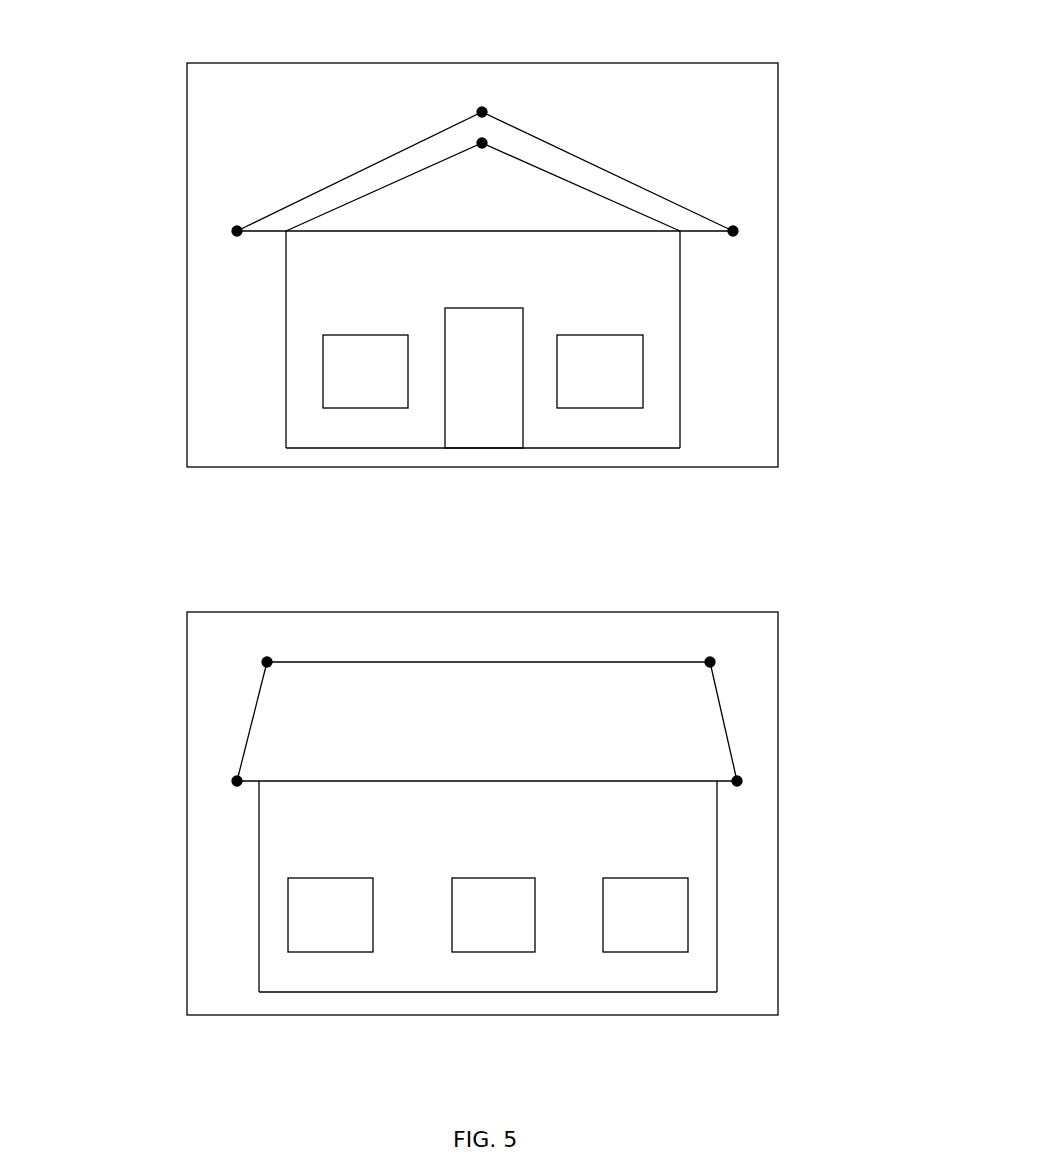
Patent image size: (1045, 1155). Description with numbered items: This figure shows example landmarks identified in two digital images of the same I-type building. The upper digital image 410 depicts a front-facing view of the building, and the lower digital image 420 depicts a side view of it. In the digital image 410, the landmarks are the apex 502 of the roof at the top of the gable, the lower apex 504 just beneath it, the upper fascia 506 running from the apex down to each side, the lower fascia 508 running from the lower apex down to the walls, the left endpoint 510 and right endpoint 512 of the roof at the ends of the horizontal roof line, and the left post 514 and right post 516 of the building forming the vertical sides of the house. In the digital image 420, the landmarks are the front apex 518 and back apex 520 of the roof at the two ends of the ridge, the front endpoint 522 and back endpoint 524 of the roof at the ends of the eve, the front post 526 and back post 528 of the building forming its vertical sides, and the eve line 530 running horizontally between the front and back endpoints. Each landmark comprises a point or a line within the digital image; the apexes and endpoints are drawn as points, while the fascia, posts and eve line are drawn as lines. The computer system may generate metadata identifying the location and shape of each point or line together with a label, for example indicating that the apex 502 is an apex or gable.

The digital image 410 is at (553, 490).
The digital image 420 is at (553, 1040).
The apex 502 is at (489, 92).
The lower apex 504 is at (482, 164).
The upper fascia 506 is at (349, 164).
The lower fascia 508 is at (600, 184).
The left endpoint 510 is at (219, 233).
The right endpoint 512 is at (752, 232).
The left post 514 is at (273, 341).
The right post 516 is at (693, 339).
The front apex 518 is at (266, 644).
The back apex 520 is at (720, 647).
The front endpoint 522 is at (220, 783).
The back endpoint 524 is at (753, 778).
The front post 526 is at (245, 938).
The back post 528 is at (730, 934).
The eve line 530 is at (503, 792).